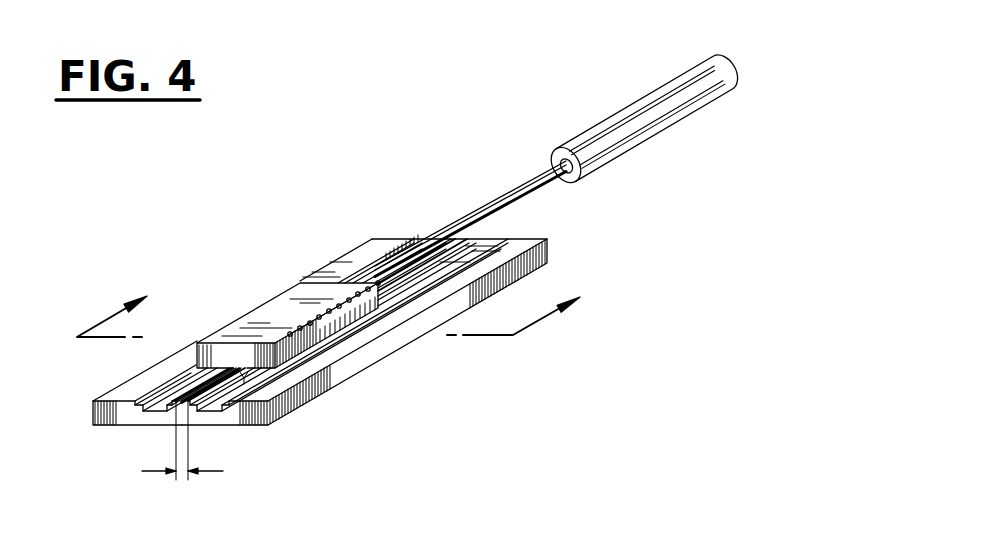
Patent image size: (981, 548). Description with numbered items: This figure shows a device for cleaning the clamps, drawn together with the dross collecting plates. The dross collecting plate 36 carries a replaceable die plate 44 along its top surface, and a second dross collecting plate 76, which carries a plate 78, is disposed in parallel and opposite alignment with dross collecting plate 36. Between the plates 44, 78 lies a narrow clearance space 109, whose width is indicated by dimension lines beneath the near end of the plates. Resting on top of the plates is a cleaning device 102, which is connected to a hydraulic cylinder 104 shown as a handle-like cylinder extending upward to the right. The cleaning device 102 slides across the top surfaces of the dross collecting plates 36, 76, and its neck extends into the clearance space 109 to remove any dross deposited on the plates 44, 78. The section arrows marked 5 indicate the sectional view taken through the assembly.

The dross collecting plate 36 is at (383, 248).
The replaceable die plate 44 is at (152, 410).
The dross collecting plate 76 is at (527, 239).
The plate 78 is at (204, 410).
The cleaning device 102 is at (283, 306).
The hydraulic cylinder 104 is at (648, 93).
The clearance space 109 is at (213, 472).
The section line 5- 5 is at (341, 303).